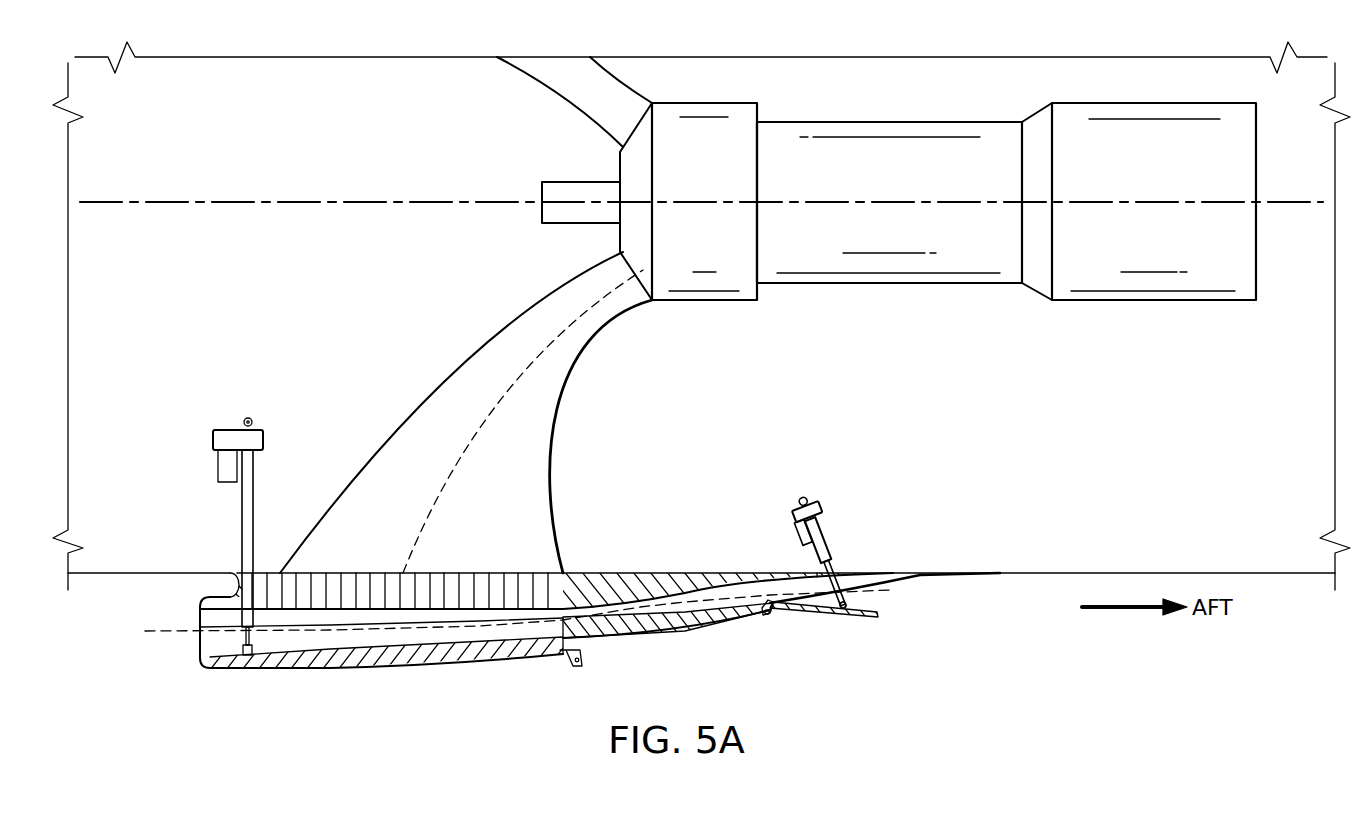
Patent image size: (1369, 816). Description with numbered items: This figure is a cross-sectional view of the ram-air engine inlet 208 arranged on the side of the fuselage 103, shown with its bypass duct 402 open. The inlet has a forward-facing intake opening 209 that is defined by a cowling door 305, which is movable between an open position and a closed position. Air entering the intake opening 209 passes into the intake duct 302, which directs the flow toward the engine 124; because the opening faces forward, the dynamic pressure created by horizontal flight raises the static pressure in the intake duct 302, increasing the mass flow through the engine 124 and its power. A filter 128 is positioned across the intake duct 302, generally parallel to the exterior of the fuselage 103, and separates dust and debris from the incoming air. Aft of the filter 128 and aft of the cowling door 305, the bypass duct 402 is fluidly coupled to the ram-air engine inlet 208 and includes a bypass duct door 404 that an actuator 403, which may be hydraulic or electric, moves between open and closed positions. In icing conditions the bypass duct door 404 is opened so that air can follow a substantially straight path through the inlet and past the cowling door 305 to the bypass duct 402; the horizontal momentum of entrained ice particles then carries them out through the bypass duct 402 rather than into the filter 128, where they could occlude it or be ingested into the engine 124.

The fuselage 103 is at (978, 575).
The engine 124 is at (1150, 302).
The filter 128 is at (495, 573).
The ram-air engine inlet 208 is at (625, 640).
The intake opening 209 is at (212, 642).
The intake duct 302 is at (537, 439).
The cowling door 305 is at (373, 668).
The bypass duct 402 is at (728, 585).
The actuator 403 is at (825, 533).
The bypass duct door 404 is at (815, 612).